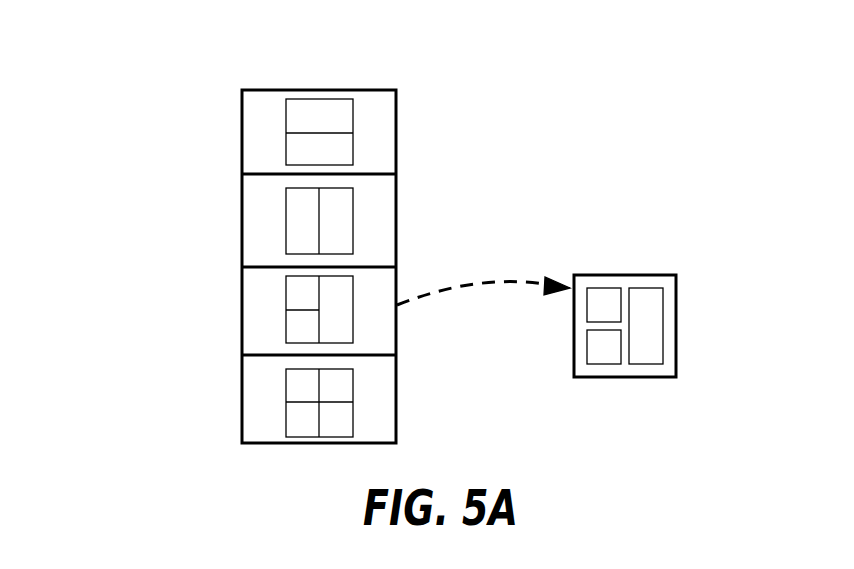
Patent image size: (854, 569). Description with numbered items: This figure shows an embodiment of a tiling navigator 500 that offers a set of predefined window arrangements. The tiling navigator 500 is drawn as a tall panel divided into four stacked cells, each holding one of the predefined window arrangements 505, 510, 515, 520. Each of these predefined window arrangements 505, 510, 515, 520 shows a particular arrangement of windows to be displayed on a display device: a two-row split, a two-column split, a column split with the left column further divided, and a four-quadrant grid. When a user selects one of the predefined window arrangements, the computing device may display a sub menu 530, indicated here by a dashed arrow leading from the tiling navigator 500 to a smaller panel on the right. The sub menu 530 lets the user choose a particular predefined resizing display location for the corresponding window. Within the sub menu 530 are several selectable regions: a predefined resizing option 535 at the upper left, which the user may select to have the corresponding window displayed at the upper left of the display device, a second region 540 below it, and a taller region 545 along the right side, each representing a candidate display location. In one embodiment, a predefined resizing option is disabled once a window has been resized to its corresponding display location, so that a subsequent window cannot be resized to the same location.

The tiling navigator 500 is at (251, 58).
The predefined window arrangement 505 is at (242, 130).
The predefined window arrangement 510 is at (242, 227).
The predefined window arrangement 515 is at (242, 309).
The predefined window arrangement 520 is at (242, 402).
The sub menu 530 is at (658, 275).
The predefined resizing option 535 is at (587, 303).
The sub menu window position 540 is at (587, 346).
The sub menu window position 545 is at (662, 327).